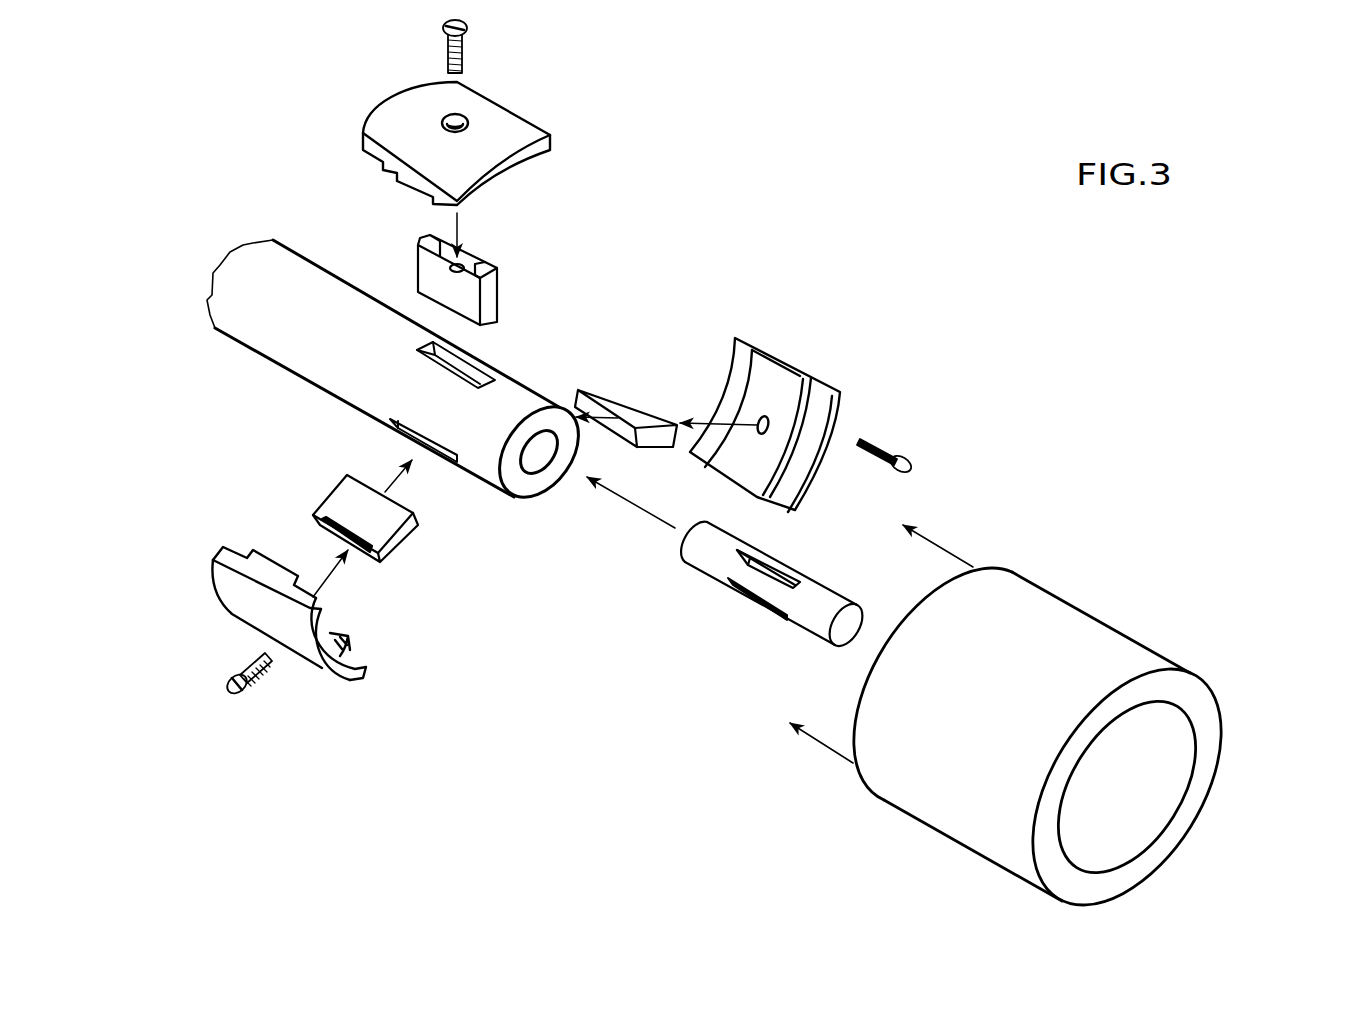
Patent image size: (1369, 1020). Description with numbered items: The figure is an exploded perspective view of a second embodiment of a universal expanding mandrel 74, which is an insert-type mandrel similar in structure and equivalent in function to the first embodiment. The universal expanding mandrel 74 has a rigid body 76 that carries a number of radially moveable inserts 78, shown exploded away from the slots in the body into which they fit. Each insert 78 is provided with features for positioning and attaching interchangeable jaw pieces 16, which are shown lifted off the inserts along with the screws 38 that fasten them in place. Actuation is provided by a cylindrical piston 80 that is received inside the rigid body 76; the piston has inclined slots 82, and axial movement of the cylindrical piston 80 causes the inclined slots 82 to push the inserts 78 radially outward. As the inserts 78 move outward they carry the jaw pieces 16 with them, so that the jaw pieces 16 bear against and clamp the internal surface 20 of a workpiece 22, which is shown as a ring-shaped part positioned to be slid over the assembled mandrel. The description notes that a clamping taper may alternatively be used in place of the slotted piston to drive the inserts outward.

The jaw pieces 16 is at (503, 127).
The internal surface 20 is at (1160, 765).
The workpiece 22 is at (960, 812).
The screw 38 is at (463, 52).
The universal expanding mandrel 74 is at (557, 293).
The rigid body 76 is at (263, 393).
The radially moveable inserts 78 is at (427, 273).
The cylindrical piston 80 is at (710, 558).
The inclined slots 82 is at (752, 600).